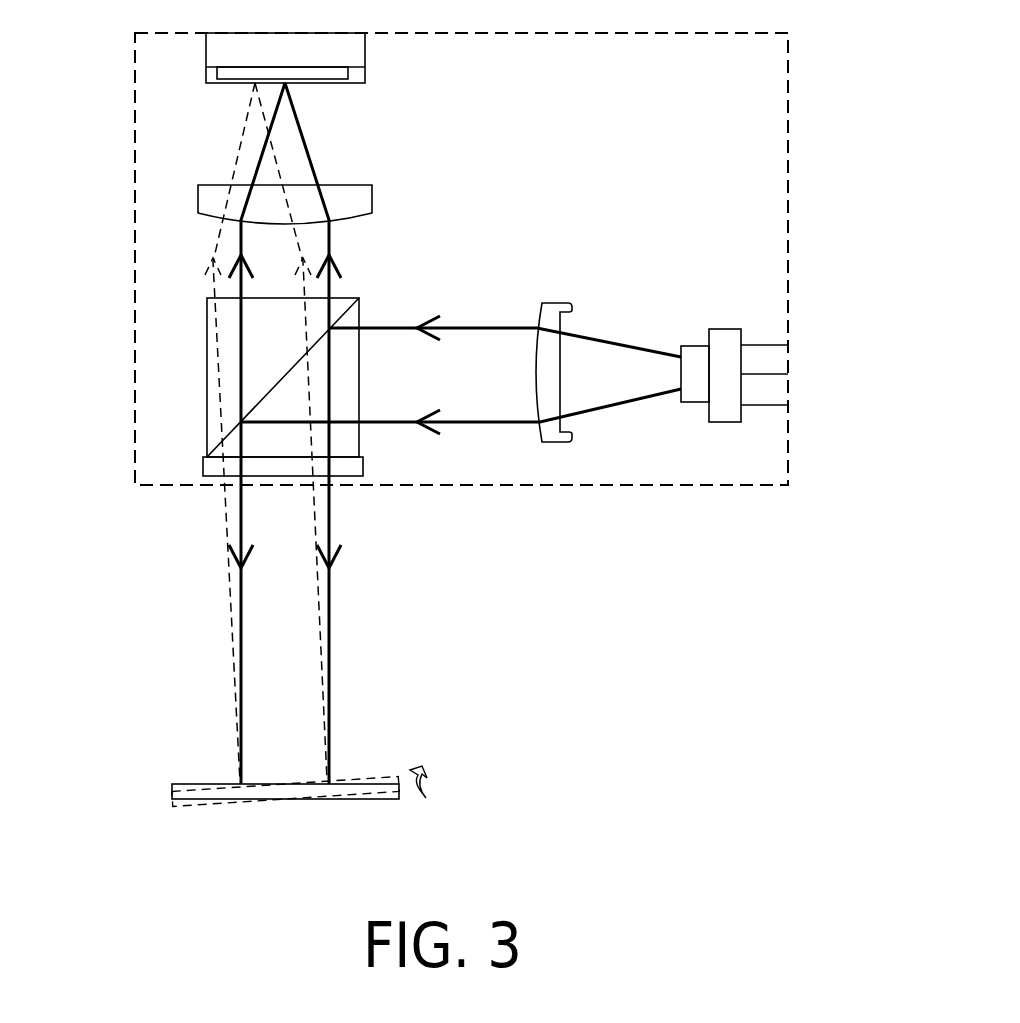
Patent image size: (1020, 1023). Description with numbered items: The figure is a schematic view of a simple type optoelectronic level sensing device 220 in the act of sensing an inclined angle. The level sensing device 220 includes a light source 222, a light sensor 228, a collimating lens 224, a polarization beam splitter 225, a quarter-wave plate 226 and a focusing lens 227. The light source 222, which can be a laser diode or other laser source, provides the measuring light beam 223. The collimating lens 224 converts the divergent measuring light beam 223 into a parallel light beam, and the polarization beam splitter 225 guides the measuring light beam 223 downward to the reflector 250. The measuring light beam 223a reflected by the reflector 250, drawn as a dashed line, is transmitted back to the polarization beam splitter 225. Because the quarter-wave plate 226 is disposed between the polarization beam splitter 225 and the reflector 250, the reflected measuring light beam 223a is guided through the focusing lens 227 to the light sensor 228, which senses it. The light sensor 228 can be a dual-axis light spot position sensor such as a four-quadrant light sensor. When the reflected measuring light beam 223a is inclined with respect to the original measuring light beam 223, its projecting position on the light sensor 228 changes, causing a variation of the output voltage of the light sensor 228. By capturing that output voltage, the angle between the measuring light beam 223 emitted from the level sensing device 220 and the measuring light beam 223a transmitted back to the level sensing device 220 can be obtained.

The level sensing device 220 is at (788, 85).
The light source 222 is at (693, 353).
The measuring light beam 223 is at (622, 405).
The measuring light beam reflected by the reflector 223a is at (215, 258).
The collimating lens 224 is at (552, 430).
The polarization beam splitter 225 is at (360, 442).
The quarter-wave plate 226 is at (208, 467).
The focusing lens 227 is at (198, 205).
The light sensor 228 is at (206, 75).
The reflector 250 is at (390, 793).